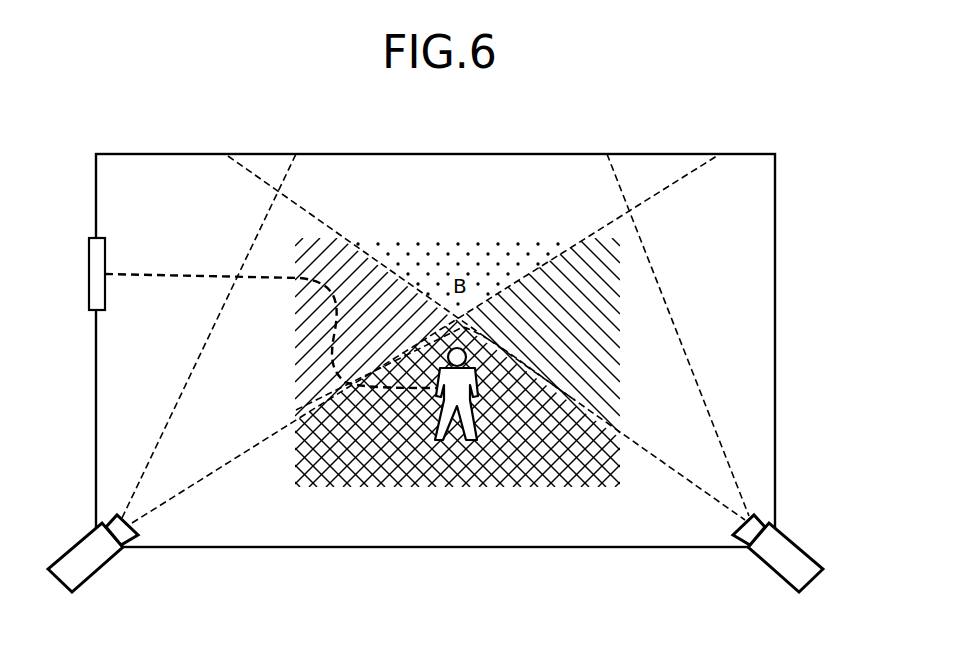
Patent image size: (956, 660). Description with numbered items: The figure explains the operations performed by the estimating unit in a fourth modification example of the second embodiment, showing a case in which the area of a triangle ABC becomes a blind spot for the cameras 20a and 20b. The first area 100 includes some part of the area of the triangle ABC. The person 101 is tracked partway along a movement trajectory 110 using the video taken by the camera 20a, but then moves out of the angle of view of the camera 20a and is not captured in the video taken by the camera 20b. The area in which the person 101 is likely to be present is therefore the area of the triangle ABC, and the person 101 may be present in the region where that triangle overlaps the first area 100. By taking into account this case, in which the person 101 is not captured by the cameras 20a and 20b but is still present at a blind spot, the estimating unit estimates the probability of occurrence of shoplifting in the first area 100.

The movement trajectory 110 is at (178, 274).
The camera 20a is at (97, 573).
The camera 20b is at (772, 573).
The person 101 is at (453, 420).
The first area 100 is at (507, 458).